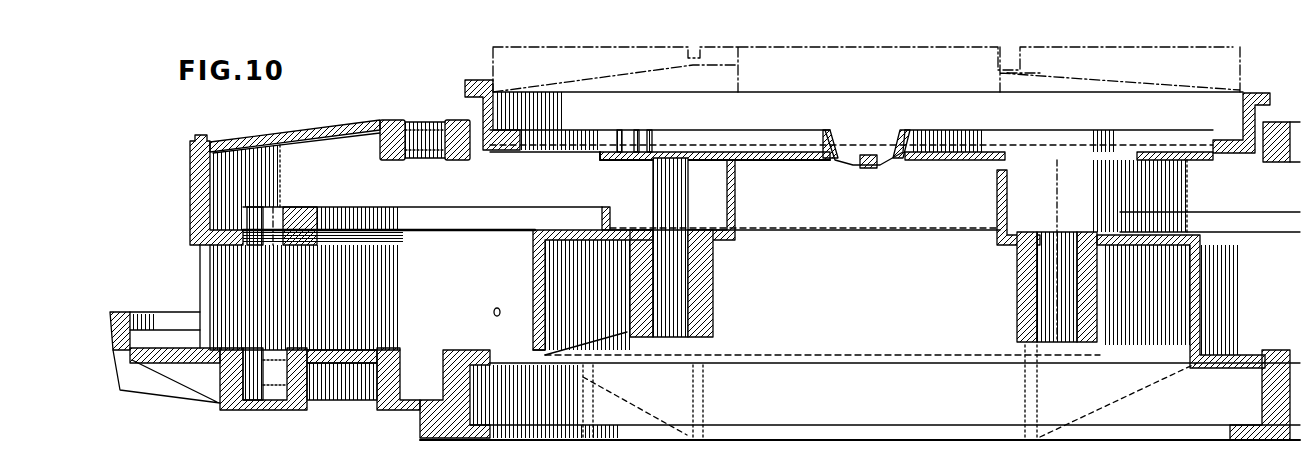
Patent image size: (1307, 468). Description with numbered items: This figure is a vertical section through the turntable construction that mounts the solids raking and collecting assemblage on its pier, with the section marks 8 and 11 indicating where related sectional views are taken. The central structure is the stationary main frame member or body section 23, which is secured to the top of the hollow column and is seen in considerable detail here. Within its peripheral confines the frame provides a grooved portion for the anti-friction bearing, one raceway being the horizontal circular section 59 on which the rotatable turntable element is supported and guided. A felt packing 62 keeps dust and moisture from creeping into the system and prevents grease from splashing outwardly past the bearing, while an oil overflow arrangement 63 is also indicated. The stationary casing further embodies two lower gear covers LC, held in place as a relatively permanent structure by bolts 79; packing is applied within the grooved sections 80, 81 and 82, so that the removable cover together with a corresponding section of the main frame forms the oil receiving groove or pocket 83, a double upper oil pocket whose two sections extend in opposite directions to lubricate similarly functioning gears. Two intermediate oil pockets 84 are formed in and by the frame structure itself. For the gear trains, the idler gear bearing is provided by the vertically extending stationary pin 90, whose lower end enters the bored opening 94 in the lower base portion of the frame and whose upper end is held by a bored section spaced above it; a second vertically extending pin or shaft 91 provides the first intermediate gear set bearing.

The section line 8- 8 is at (465, 88).
The section line II-II 11 is at (1000, 113).
The stationary main frame member or body section 23 is at (296, 413).
The horizontal circular section 59 is at (117, 325).
The felt packing 62 is at (122, 315).
The oil overflow arrangement 63 is at (492, 310).
The bolts 79 is at (215, 180).
The grooved section 80 is at (620, 150).
The grooved section 81 is at (637, 150).
The grooved section 82 is at (650, 150).
The oil receiving groove or pocket 83 is at (505, 140).
The oil pockets or receiving spaces 84 is at (1112, 230).
The vertically extending pin or stationary shaft 90 is at (272, 222).
The vertically extending pin or shaft 91 is at (425, 150).
The bored opening 94 is at (257, 410).
The lower gear covers LC is at (301, 142).